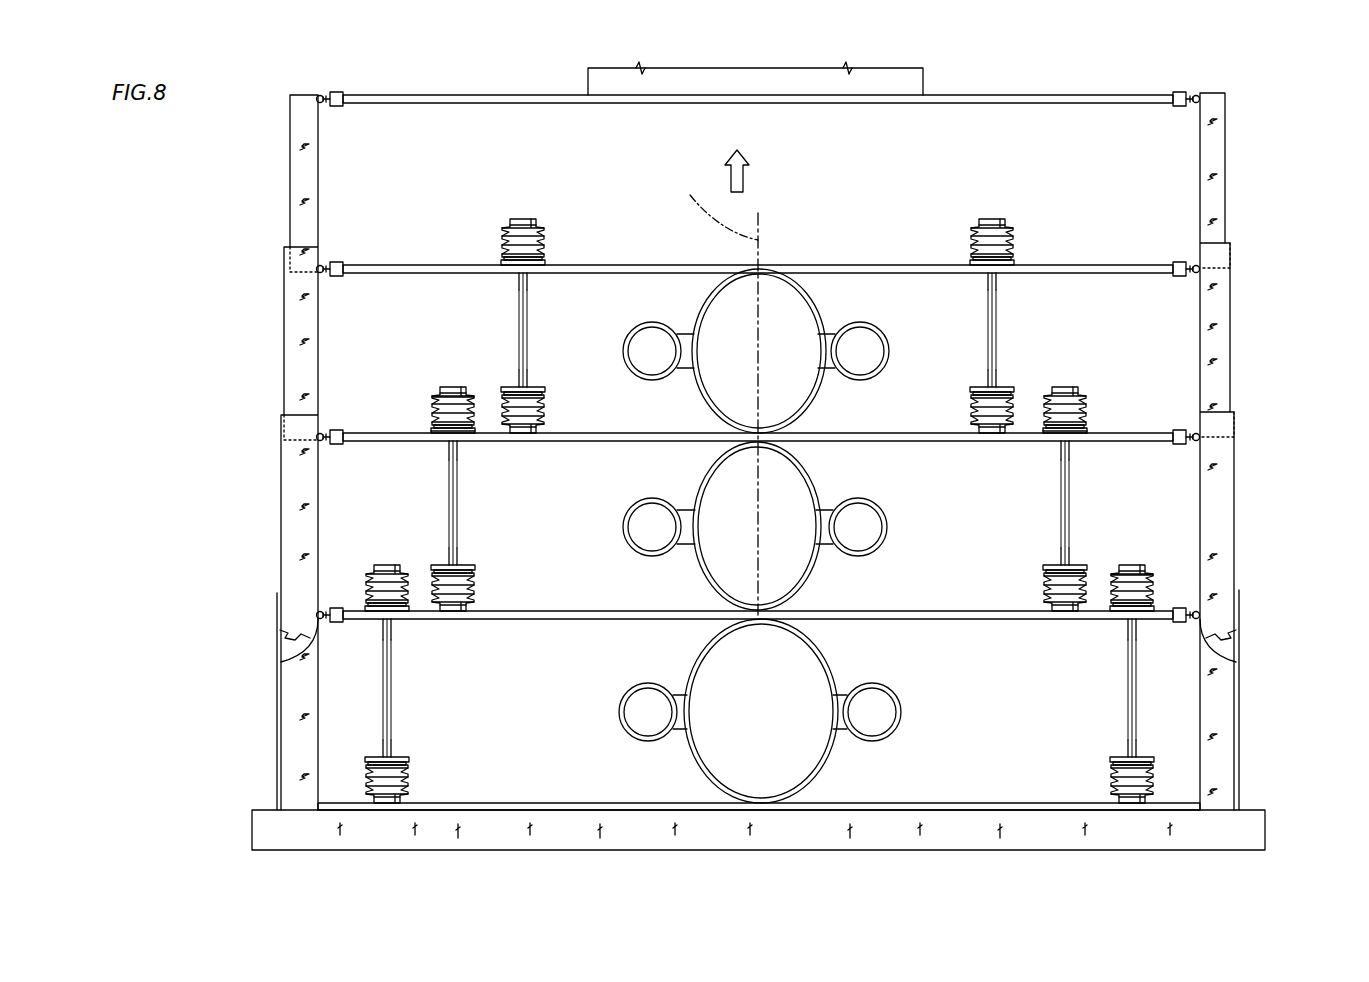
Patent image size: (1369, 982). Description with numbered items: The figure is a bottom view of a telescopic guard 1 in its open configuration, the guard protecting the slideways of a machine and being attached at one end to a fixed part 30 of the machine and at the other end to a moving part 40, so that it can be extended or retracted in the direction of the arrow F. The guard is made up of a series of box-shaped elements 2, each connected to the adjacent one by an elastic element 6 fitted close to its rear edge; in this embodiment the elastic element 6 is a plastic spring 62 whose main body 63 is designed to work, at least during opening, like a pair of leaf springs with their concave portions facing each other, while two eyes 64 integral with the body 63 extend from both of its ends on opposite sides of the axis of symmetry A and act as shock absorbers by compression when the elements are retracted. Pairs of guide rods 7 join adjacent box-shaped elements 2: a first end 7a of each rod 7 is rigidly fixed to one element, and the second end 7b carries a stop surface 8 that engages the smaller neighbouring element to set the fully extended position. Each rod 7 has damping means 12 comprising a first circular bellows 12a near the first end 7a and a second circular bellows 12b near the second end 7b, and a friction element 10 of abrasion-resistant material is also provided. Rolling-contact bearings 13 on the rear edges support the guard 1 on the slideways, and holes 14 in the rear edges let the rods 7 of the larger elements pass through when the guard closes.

The telescopic guard 1 is at (1248, 112).
The box-shaped element 2 is at (283, 163).
The elastic element 6 is at (658, 300).
The guide rod 7 is at (441, 495).
The first end of rod 7a is at (441, 552).
The second end of rod 7b is at (441, 450).
The stop surface 8 is at (428, 408).
The friction element 10 is at (432, 436).
The damping means 12 is at (497, 392).
The first circular bellows 12a is at (1018, 388).
The second circular bellows 12b is at (1018, 235).
The rolling-contact bearing 13 is at (1185, 262).
The hole 14 is at (448, 265).
The fixed part of the machine 30 is at (290, 830).
The moving part of the machine 40 is at (742, 82).
The plastic spring 62 is at (820, 298).
The main body 63 is at (778, 272).
The eye 64 is at (625, 342).